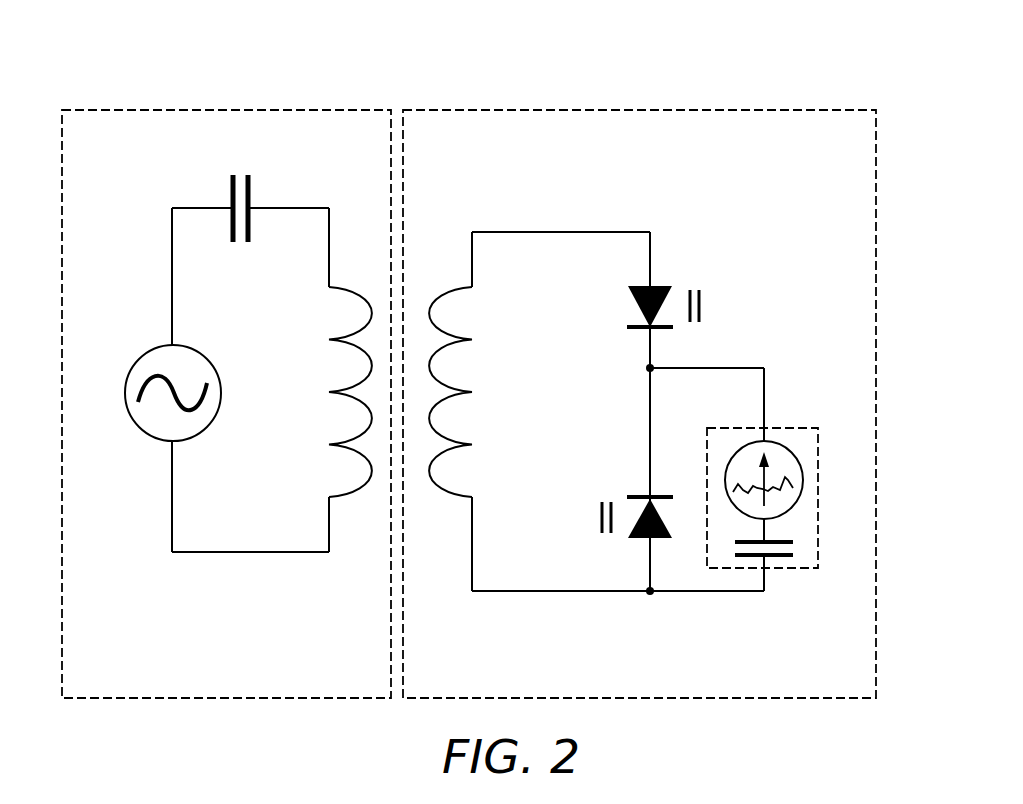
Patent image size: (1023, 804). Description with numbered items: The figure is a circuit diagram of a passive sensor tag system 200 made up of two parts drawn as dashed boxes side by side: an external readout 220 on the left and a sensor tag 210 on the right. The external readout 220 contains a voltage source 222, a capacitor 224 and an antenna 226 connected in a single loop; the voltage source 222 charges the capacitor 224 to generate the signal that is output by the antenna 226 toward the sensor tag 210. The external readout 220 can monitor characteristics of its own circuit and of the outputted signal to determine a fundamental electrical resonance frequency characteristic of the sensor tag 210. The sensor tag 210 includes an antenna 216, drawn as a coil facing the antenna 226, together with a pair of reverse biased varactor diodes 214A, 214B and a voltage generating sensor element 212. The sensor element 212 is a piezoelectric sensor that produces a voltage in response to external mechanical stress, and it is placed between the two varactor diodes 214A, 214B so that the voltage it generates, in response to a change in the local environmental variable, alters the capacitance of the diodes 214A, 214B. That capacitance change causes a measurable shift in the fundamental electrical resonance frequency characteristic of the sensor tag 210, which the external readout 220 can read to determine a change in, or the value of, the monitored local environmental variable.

The passive sensor tag system 200 is at (902, 86).
The sensor tag 210 is at (634, 110).
The voltage generating sensor element 212 is at (787, 428).
The reverse biased varactor diode 214A is at (660, 284).
The reverse biased varactor diode 214B is at (632, 537).
The antenna 216 is at (440, 290).
The external readout 220 is at (247, 109).
The voltage source 222 is at (136, 360).
The capacitor 224 is at (251, 186).
The antenna 226 is at (355, 291).